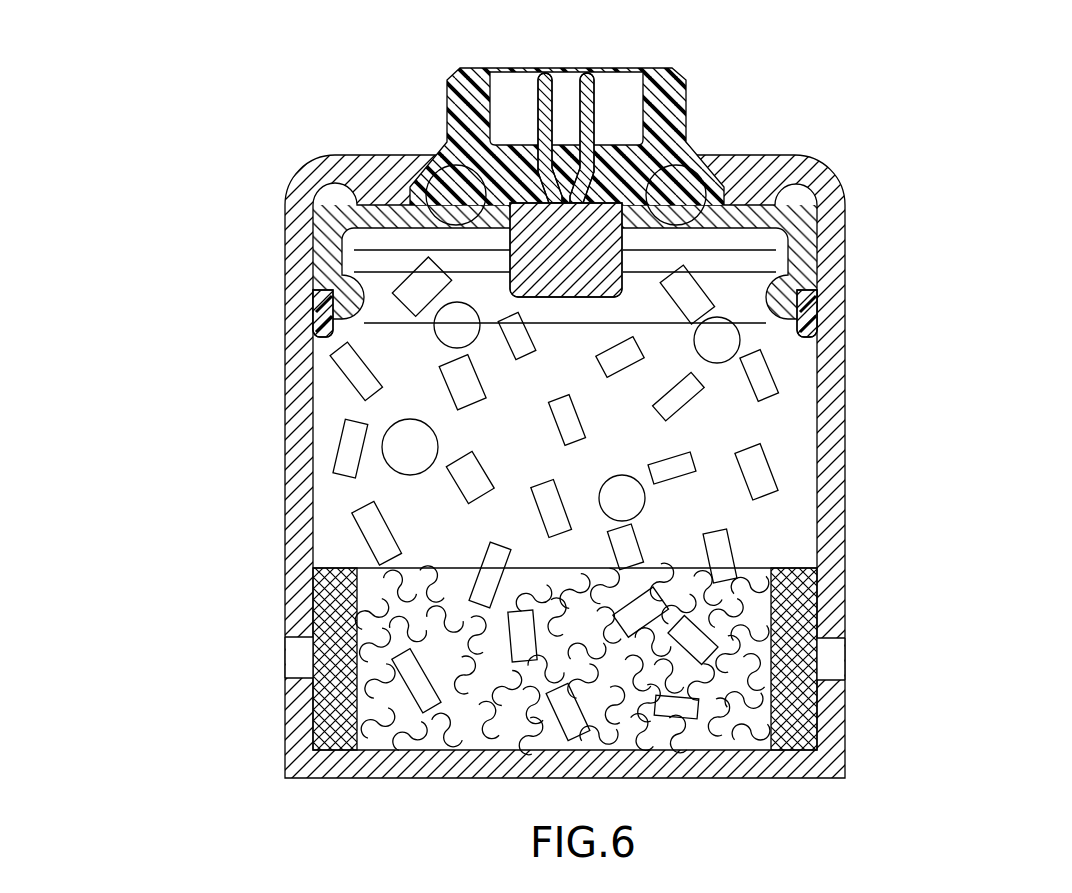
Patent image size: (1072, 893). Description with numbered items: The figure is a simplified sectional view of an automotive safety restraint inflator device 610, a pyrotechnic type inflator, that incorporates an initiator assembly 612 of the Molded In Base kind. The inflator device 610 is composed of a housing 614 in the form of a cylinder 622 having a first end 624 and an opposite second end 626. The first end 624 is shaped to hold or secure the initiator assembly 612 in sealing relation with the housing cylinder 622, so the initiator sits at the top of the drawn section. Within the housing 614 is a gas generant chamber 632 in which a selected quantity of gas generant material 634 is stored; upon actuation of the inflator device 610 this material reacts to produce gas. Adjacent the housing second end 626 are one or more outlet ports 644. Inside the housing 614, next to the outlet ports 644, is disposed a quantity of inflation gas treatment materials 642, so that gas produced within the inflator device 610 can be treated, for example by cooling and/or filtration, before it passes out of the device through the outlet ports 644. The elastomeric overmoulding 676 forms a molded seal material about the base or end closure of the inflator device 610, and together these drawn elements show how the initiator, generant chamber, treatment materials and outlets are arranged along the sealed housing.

The automotive safety restraint inflator device 610 is at (605, 439).
The initiator assembly 612 is at (570, 246).
The housing 614 is at (848, 495).
The cylinder 622 is at (300, 385).
The first end 624 is at (307, 153).
The second end 626 is at (905, 718).
The gas generant chamber 632 is at (790, 420).
The gas generant material 634 is at (370, 522).
The inflation gas treatment materials 642 is at (337, 707).
The outlet ports 644 is at (302, 677).
The elastomeric overmoulding 676 is at (318, 302).